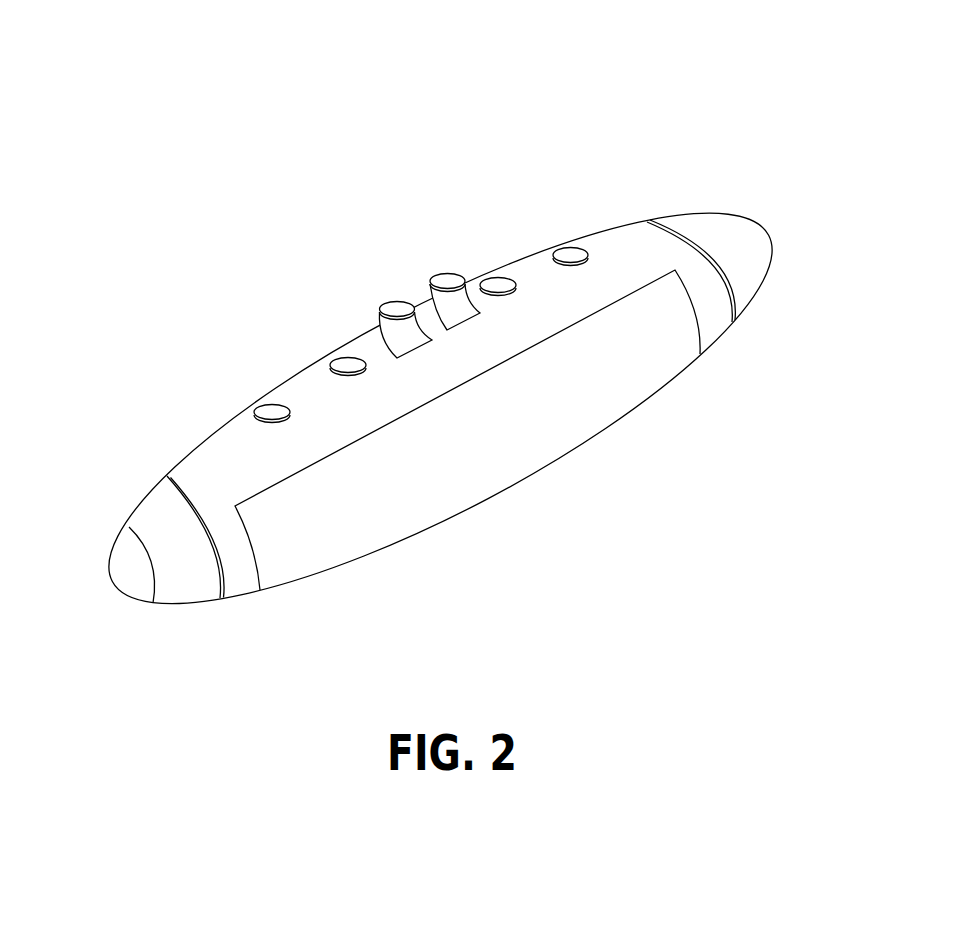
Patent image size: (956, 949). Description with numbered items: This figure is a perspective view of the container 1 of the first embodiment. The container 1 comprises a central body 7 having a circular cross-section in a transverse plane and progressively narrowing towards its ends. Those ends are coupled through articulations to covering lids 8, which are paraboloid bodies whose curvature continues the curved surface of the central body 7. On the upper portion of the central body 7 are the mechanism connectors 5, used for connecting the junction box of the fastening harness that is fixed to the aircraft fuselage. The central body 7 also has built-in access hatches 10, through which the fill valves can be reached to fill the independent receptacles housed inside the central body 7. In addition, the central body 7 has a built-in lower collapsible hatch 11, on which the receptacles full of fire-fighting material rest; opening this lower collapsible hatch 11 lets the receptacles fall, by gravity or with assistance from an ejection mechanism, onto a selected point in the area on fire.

The container 1 is at (623, 138).
The mechanism connectors 5 is at (397, 309).
The central body 7 is at (230, 473).
The covering lids 8 is at (728, 211).
The access hatches 10 is at (272, 410).
The lower collapsible hatch 11 is at (457, 472).